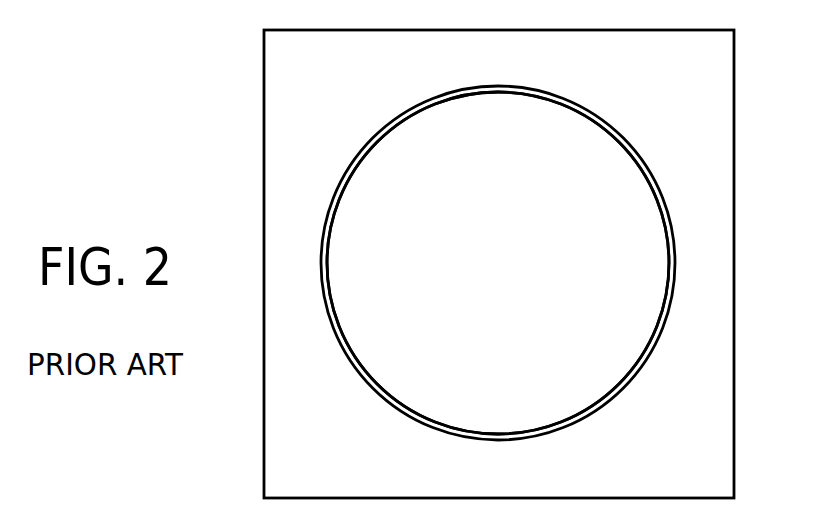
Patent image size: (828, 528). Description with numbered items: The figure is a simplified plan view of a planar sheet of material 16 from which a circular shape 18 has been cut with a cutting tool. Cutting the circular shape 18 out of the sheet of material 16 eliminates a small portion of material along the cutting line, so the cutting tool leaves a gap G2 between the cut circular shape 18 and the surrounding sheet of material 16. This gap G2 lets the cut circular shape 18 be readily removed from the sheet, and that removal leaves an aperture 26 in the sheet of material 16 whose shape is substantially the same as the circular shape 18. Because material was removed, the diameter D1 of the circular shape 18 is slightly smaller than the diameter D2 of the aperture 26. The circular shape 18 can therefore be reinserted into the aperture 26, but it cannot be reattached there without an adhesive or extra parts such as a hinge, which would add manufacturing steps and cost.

The planar sheet of material 16 is at (726, 63).
The circular shape 18 is at (514, 381).
The aperture 26 is at (362, 142).
The diameter of the shape D1 is at (668, 263).
The diameter of the aperture D2 is at (498, 47).
The gap G2 is at (598, 357).